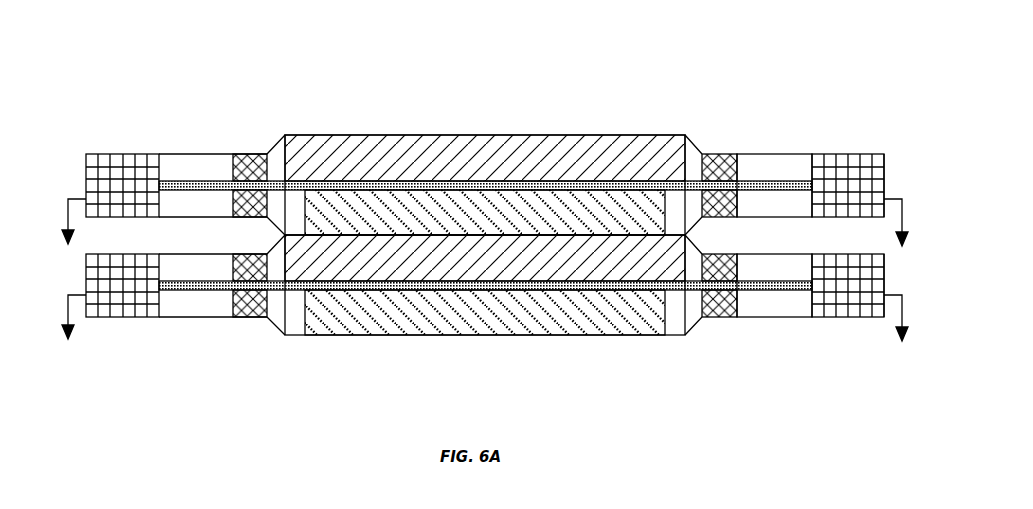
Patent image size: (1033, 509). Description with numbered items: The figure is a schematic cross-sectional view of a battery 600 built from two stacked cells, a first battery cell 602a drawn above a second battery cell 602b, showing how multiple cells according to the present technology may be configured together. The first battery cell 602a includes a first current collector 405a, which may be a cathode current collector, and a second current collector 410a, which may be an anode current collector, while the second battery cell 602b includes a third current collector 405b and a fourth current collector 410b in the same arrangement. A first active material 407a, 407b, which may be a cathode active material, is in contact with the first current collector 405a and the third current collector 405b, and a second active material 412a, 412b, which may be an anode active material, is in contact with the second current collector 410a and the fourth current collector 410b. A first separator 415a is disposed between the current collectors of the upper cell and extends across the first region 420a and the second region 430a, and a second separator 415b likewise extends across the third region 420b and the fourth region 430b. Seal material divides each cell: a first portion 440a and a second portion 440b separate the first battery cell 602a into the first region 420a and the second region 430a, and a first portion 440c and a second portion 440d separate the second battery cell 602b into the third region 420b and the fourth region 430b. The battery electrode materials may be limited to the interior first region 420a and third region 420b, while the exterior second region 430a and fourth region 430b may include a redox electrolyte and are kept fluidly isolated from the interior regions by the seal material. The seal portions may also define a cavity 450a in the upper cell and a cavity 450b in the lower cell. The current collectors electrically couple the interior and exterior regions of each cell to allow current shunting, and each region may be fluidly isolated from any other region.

The battery 600 is at (262, 66).
The first current collector 405a is at (567, 135).
The third current collector 405b is at (595, 237).
The first active material 407a is at (393, 137).
The first active material 407b is at (510, 290).
The second current collector 410a is at (318, 235).
The fourth current collector 410b is at (405, 335).
The second active material 412a is at (560, 185).
The second active material 412b is at (478, 335).
The first separator 415a is at (693, 180).
The second separator 415b is at (713, 317).
The first region 420a is at (283, 135).
The third region 420b is at (318, 335).
The second region 430a is at (752, 153).
The fourth region 430b is at (745, 318).
The first portion of the seal material 440a is at (243, 153).
The second portion of the seal material 440b is at (107, 153).
The first portion of the seal material 440c is at (247, 317).
The second portion of the seal material 440d is at (105, 317).
The cavity 450a is at (802, 153).
The cavity 450b is at (800, 318).
The first battery cell 602a is at (873, 153).
The second battery cell 602b is at (852, 318).